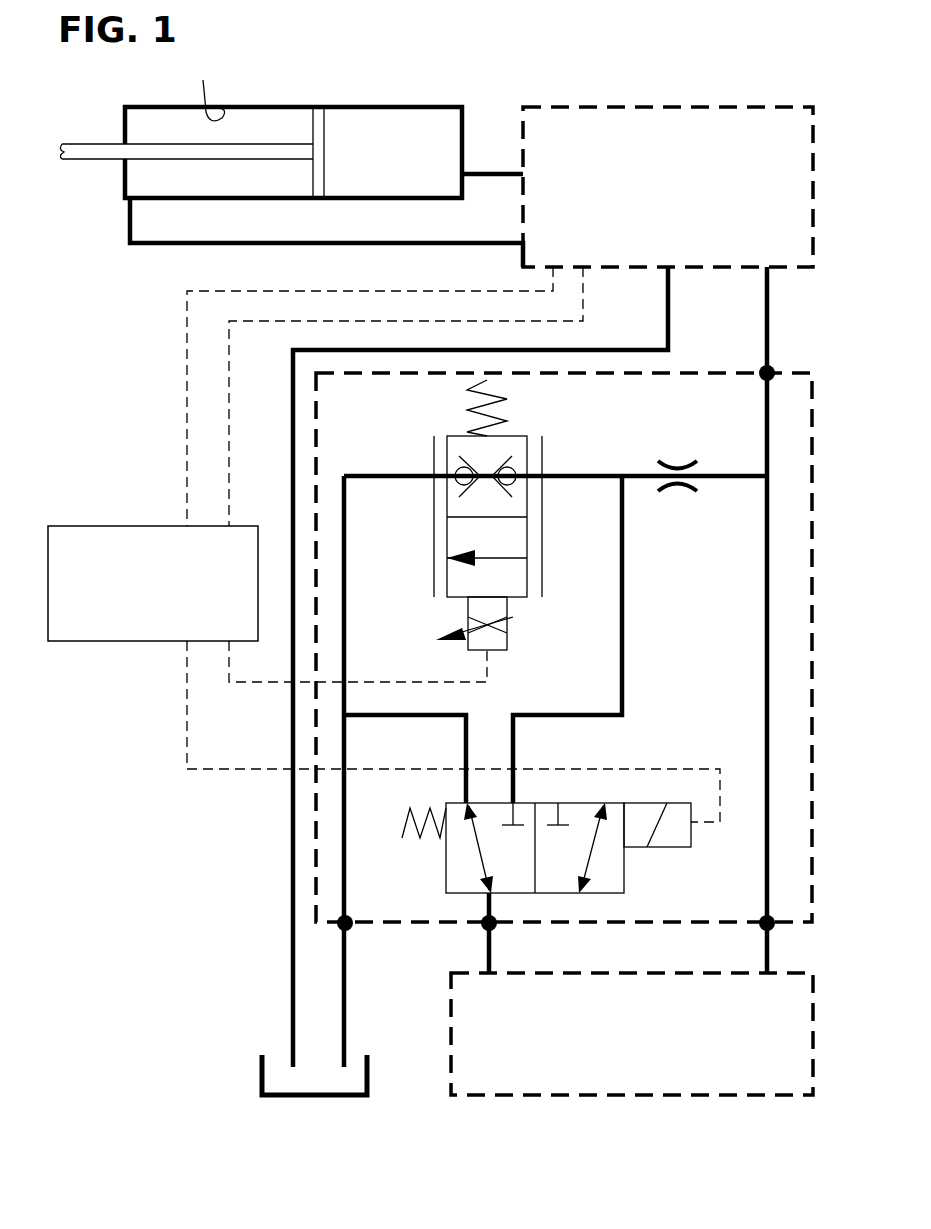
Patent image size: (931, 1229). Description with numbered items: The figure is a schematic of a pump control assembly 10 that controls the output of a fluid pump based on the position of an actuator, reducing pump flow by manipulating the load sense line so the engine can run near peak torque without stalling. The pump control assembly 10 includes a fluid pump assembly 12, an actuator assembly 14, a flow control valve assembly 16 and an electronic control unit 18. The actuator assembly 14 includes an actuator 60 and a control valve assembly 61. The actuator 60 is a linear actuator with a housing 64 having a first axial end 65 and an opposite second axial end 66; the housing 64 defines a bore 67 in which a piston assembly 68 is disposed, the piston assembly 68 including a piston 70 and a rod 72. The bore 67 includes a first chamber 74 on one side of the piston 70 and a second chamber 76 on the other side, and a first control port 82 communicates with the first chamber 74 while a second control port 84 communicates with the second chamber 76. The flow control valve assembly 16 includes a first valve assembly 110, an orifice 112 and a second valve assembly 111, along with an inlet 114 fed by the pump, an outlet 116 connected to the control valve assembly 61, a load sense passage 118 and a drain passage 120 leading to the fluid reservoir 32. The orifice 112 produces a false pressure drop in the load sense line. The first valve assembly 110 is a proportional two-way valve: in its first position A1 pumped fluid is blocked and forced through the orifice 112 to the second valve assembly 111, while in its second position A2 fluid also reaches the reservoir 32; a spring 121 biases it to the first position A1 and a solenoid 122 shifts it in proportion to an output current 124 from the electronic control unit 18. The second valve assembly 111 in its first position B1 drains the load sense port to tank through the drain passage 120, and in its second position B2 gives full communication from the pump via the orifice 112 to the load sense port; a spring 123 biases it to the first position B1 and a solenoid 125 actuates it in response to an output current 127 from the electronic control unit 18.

The pump control assembly 10 is at (778, 90).
The fluid pump assembly 12 is at (795, 955).
The actuator assembly 14 is at (350, 66).
The flow control valve assembly 16 is at (424, 934).
The electronic control unit 18 is at (80, 526).
The fluid reservoir 32 is at (262, 1062).
The actuator 60 is at (294, 90).
The control valve assembly 61 is at (635, 92).
The housing 64 is at (357, 106).
The first axial end 65 is at (464, 133).
The second axial end 66 is at (124, 183).
The bore 67 is at (207, 91).
The piston assembly 68 is at (272, 190).
The piston 70 is at (325, 145).
The rod 72 is at (77, 143).
The first chamber 74 is at (408, 180).
The second chamber 76 is at (213, 180).
The first control port 82 is at (465, 181).
The second control port 84 is at (127, 206).
The first valve assembly 110 is at (486, 536).
The second valve assembly 111 is at (534, 860).
The orifice 112 is at (665, 490).
The inlet 114 is at (752, 910).
The outlet 116 is at (775, 366).
The load sense passage 118 is at (484, 929).
The drain passage 120 is at (340, 929).
The spring 121 is at (478, 390).
The solenoid 122 is at (507, 640).
The spring 123 is at (441, 838).
The output current 124 is at (408, 681).
The solenoid 125 is at (660, 840).
The output current 127 is at (423, 768).
The first position A1 is at (458, 496).
The second position A2 is at (457, 576).
The first position B1 is at (456, 878).
The second position B2 is at (553, 883).